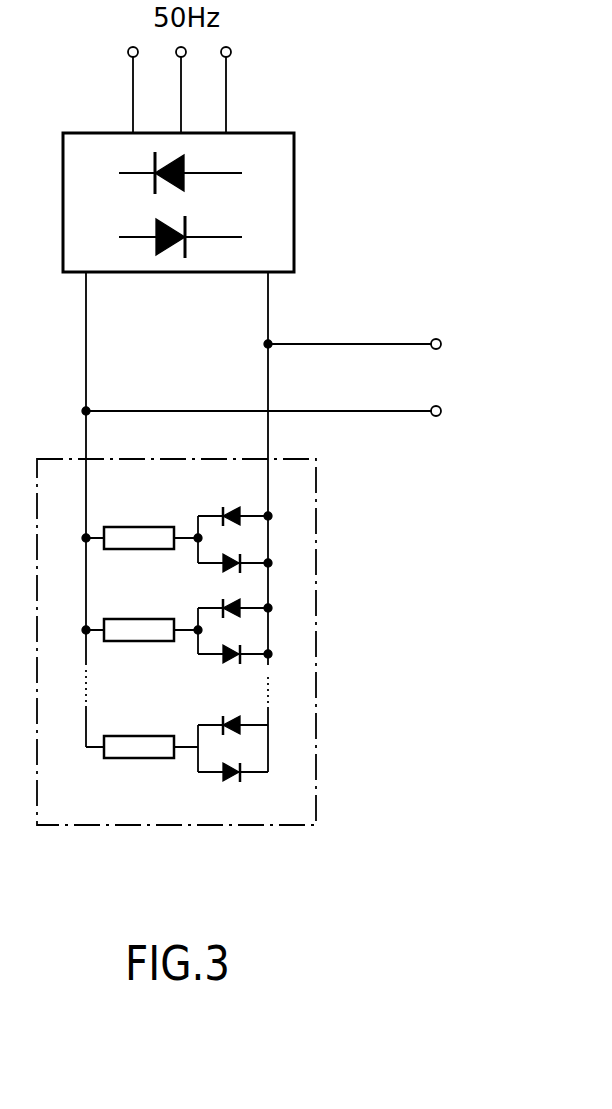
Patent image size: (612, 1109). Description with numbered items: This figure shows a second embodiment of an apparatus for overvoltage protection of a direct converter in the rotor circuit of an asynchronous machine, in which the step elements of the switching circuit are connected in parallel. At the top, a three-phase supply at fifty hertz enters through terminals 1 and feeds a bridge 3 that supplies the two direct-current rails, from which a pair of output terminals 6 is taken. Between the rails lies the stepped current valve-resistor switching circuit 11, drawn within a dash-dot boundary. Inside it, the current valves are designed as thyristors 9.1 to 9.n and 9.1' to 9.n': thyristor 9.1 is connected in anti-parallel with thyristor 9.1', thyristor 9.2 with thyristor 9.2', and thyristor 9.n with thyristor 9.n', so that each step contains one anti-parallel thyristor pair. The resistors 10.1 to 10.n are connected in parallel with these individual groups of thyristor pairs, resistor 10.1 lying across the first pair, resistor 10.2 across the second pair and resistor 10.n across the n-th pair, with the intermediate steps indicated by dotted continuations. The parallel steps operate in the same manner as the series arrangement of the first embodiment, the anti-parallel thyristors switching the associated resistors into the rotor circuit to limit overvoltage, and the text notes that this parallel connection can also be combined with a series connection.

The AC mains input terminals (50 Hz) 1 is at (128, 50).
The rectifier 3 is at (275, 148).
The DC output terminals 6 is at (440, 348).
The thyristor 9.1 is at (226, 504).
The thyristor 9.1' is at (226, 571).
The thyristor 9.2 is at (226, 599).
The thyristor 9.2' is at (227, 669).
The thyristor 9.n is at (225, 714).
The thyristor 9.n' is at (225, 786).
The resistor 10.1 is at (122, 527).
The resistor 10.2 is at (122, 619).
The resistor 10.n is at (122, 736).
The stepped current valve-resistor switching circuit 11 is at (317, 732).